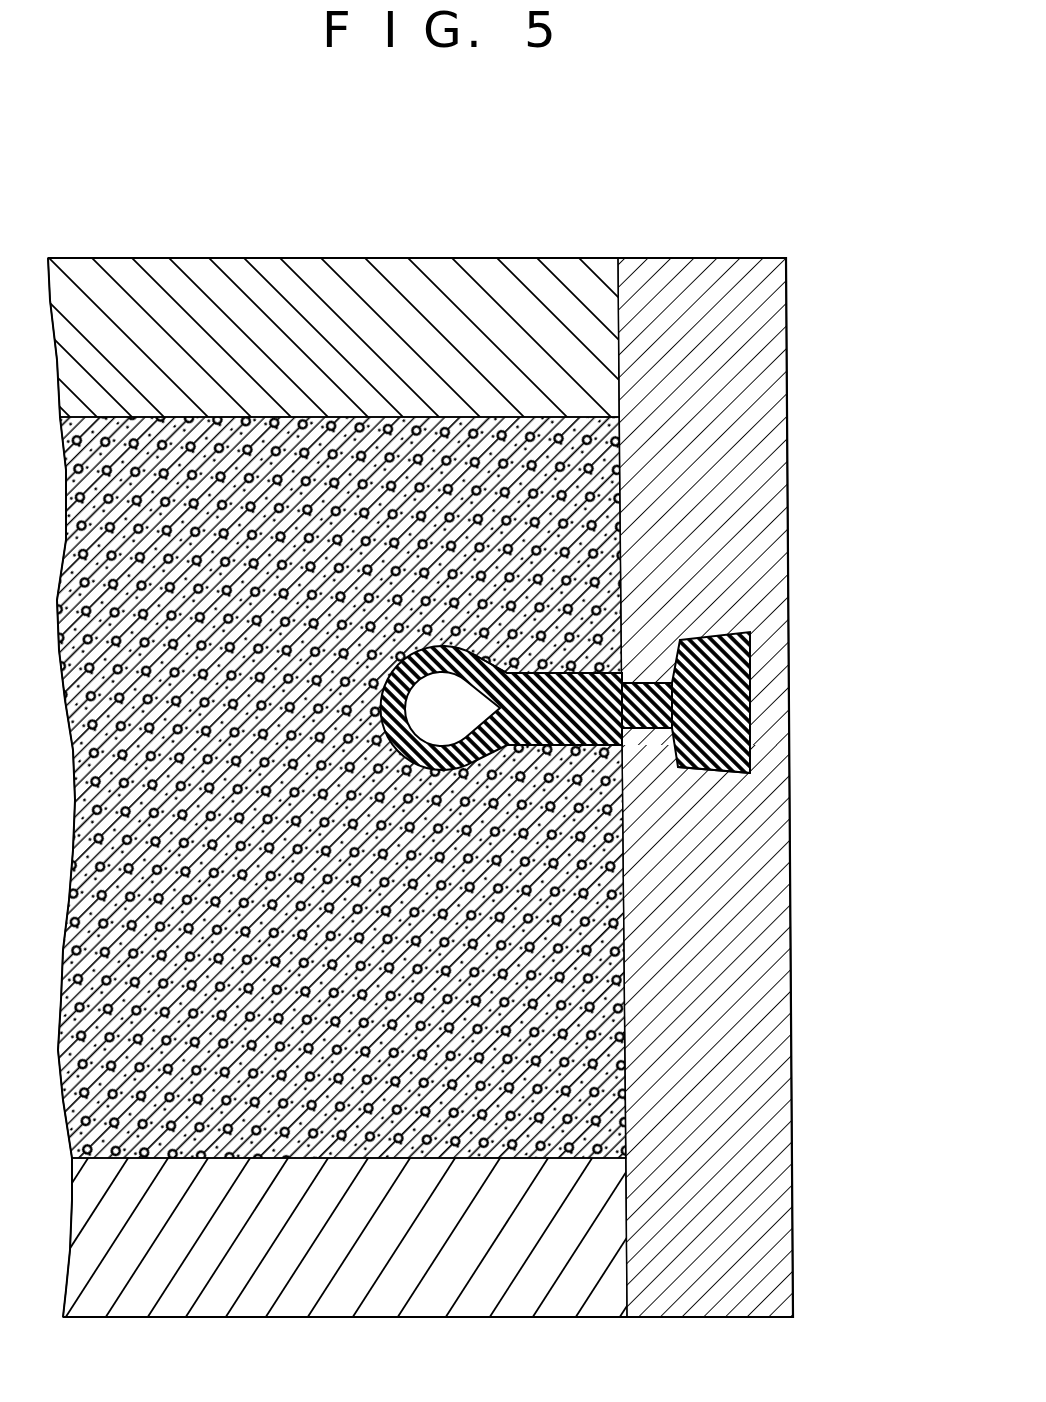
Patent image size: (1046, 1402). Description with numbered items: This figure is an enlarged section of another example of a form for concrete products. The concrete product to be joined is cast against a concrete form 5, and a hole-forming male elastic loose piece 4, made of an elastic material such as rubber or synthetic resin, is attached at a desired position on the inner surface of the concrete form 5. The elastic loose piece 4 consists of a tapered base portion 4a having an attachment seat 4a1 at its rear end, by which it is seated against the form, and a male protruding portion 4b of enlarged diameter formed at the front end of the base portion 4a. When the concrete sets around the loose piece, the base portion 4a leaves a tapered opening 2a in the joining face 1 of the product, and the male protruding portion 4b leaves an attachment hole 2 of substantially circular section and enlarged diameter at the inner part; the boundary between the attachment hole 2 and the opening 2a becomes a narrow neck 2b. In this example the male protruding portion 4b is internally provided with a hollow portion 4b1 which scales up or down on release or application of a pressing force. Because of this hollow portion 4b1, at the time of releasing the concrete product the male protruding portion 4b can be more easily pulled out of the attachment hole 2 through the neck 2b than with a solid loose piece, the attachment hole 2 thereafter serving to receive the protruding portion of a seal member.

The joining face 1 is at (620, 542).
The attachment hole 2 is at (443, 690).
The opening 2a is at (750, 700).
The neck 2b is at (500, 667).
The hole-forming male elastic loose piece 4 is at (890, 783).
The tapered base portion 4a is at (630, 815).
The attachment seat 4a1 is at (722, 776).
The male protruding portion 4b is at (503, 745).
The hollow portion 4b1 is at (497, 665).
The concrete form 5 is at (585, 370).